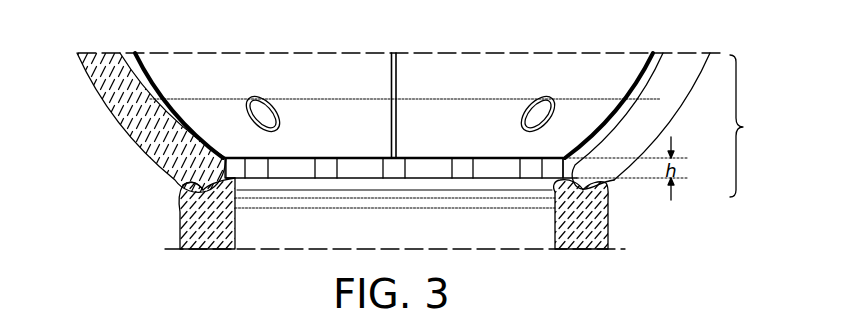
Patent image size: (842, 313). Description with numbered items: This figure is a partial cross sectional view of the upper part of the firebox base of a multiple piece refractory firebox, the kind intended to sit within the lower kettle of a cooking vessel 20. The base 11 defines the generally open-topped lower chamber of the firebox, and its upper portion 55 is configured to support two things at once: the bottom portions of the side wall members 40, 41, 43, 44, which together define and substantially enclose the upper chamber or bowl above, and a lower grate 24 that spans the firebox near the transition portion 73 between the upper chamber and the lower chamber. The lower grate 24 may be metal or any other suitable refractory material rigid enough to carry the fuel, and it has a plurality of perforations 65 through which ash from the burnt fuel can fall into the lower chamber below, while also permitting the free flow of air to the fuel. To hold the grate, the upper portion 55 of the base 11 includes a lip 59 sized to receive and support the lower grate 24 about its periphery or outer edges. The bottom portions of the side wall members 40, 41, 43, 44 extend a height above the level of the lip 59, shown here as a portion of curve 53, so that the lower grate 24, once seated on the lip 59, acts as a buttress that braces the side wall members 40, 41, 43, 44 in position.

The base 11 is at (348, 196).
The cooking vessel 20 is at (76, 311).
The lower grate 24 is at (292, 180).
The side wall member 40 is at (296, 78).
The side wall member 41 is at (161, 108).
The side wall member 43 is at (652, 73).
The side wall member 44 is at (465, 78).
The curve 53 is at (573, 172).
The upper portion 55 is at (180, 196).
The lip 59 is at (228, 158).
The perforations 65 is at (258, 163).
The transition portion 73 is at (756, 126).